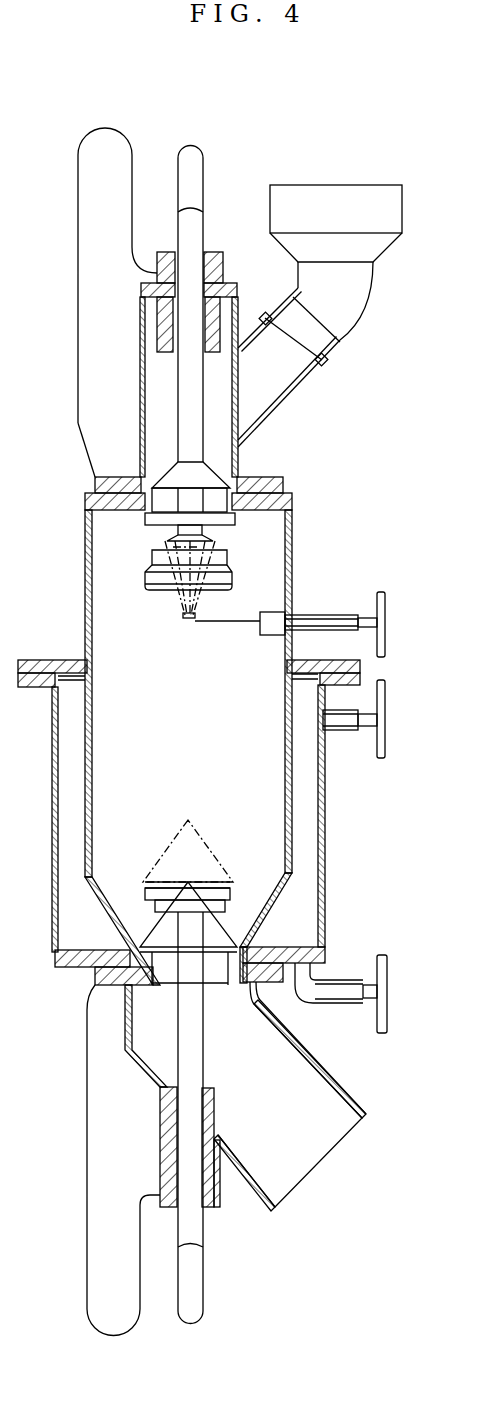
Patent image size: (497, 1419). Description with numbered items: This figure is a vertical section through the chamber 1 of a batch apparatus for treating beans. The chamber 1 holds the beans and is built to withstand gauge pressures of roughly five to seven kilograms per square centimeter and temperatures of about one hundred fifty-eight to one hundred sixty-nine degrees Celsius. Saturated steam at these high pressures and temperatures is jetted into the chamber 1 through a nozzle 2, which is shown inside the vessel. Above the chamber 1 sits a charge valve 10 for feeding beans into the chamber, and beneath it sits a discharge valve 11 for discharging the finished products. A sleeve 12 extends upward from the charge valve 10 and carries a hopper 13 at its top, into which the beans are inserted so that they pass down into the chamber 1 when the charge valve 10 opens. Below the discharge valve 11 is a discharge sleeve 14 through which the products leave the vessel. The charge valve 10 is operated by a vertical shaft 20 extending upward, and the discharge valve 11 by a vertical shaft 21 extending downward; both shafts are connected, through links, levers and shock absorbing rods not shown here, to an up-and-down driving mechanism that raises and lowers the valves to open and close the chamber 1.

The chamber 1 is at (292, 575).
The nozzle 2 is at (190, 620).
The charge valve 10 is at (168, 478).
The discharge valve 11 is at (210, 855).
The sleeve 12 is at (238, 312).
The hopper 13 is at (373, 195).
The discharge sleeve 14 is at (320, 1067).
The vertical shaft 20 is at (203, 408).
The vertical shaft 21 is at (195, 1035).